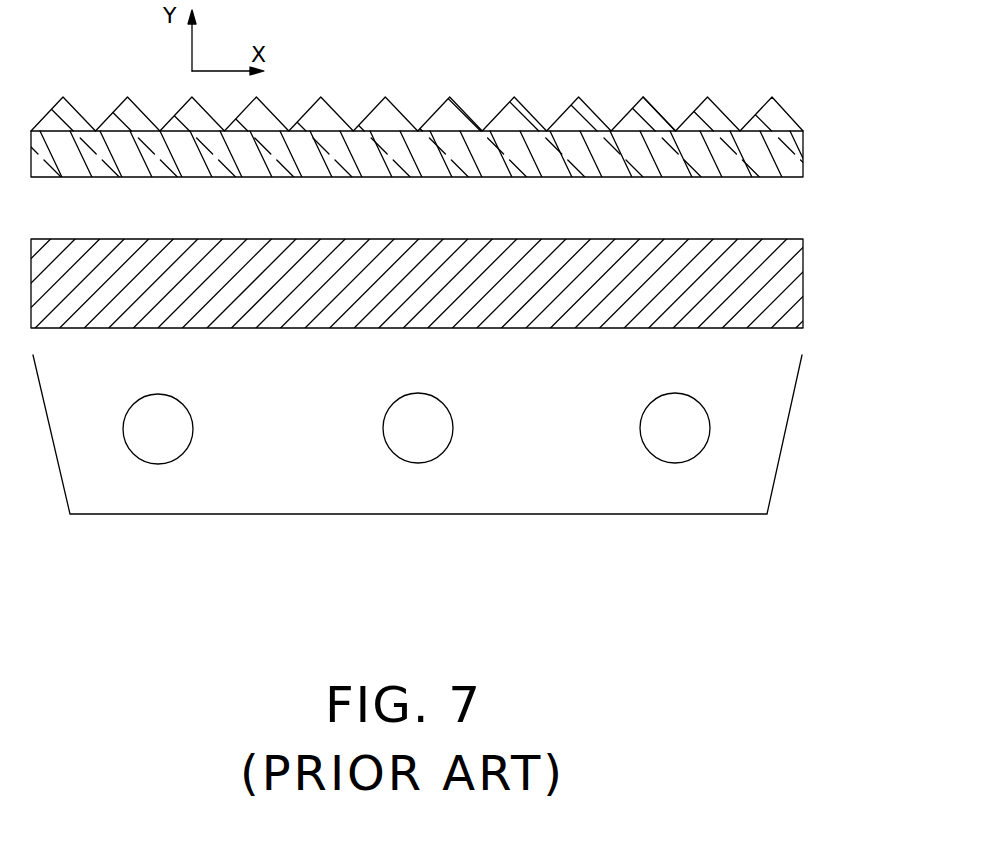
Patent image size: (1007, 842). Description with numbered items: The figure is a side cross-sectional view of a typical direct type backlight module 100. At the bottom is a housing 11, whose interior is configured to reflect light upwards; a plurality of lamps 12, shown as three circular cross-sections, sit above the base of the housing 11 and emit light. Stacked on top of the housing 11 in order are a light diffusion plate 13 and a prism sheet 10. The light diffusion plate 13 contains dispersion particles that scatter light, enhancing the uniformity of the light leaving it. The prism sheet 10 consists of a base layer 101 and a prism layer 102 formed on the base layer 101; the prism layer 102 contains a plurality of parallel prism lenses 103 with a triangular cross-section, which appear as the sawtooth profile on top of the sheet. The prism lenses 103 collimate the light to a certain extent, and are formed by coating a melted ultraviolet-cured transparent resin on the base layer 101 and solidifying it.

The backlight module 100 is at (552, 70).
The prism sheet 10 is at (448, 139).
The base layer 101 is at (735, 172).
The prism layer 102 is at (777, 122).
The prism lenses 103 is at (655, 108).
The light diffusion plate 13 is at (792, 288).
The housing 11 is at (791, 410).
The lamps 12 is at (683, 448).